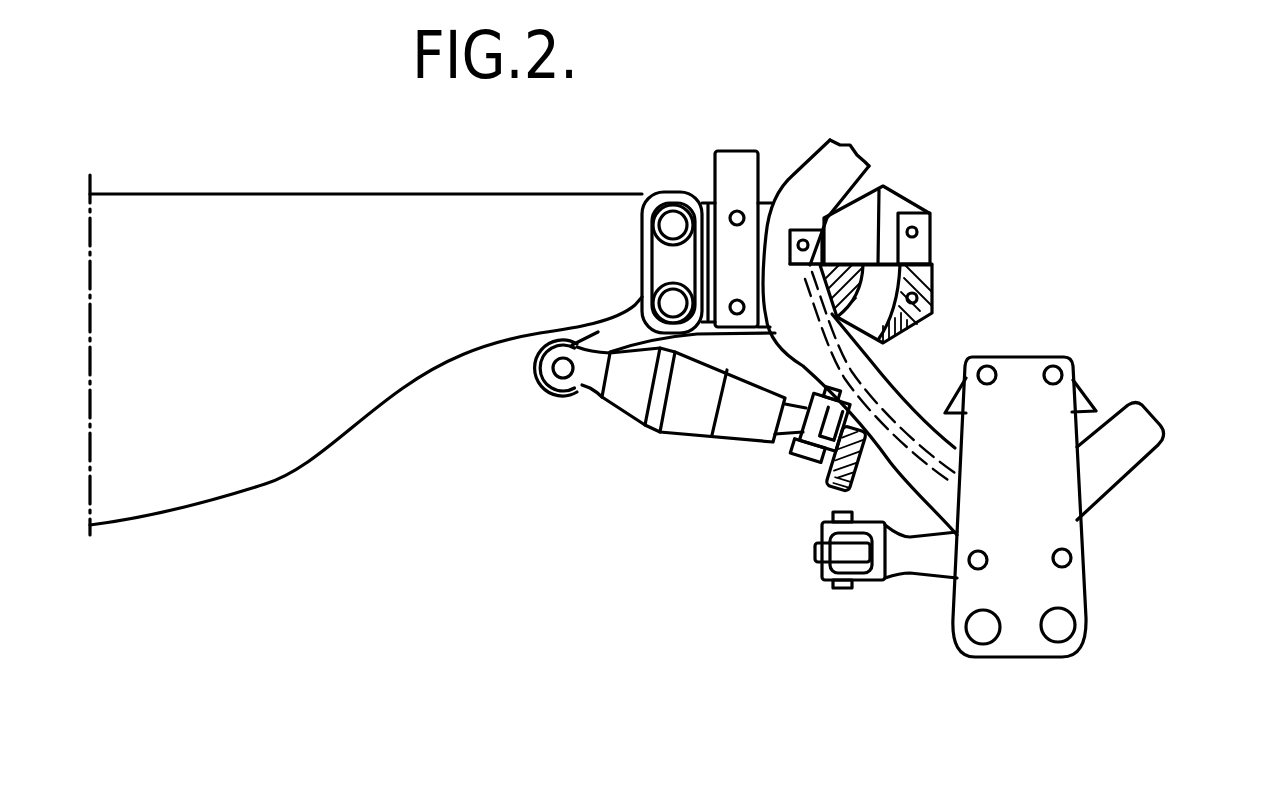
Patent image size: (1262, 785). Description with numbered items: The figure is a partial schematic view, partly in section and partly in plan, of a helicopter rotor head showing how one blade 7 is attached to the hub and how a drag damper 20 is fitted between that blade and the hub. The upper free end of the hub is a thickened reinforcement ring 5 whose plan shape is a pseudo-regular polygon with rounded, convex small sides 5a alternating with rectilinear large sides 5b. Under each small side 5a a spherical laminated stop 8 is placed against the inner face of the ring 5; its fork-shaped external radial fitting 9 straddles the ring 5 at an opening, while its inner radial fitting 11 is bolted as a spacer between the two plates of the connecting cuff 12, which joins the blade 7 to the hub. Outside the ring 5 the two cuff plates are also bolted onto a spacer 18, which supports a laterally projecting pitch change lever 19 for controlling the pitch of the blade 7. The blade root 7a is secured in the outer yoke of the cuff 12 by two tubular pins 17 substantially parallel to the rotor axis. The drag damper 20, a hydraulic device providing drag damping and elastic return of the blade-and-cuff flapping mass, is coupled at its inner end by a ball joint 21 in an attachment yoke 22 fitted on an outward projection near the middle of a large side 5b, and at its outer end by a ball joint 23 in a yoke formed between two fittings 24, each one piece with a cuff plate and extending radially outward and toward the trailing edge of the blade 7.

The reinforcement ring 5 is at (868, 150).
The small sides 5a is at (782, 230).
The large sides 5b is at (893, 398).
The blade 7 is at (235, 233).
The blade root 7a is at (625, 237).
The spherical laminated stop 8 is at (933, 213).
The external radial fitting 9 is at (840, 280).
The inner radial fitting 11 is at (907, 267).
The connecting cuff 12 is at (708, 172).
The tubular pins 17 is at (672, 220).
The spacer 18 is at (765, 360).
The pitch change lever 19 is at (738, 158).
The drag damper 20 is at (682, 438).
The ball joint 21 is at (797, 443).
The attachment yoke 22 is at (808, 468).
The ball joint 23 is at (562, 382).
The fittings 24 is at (543, 350).